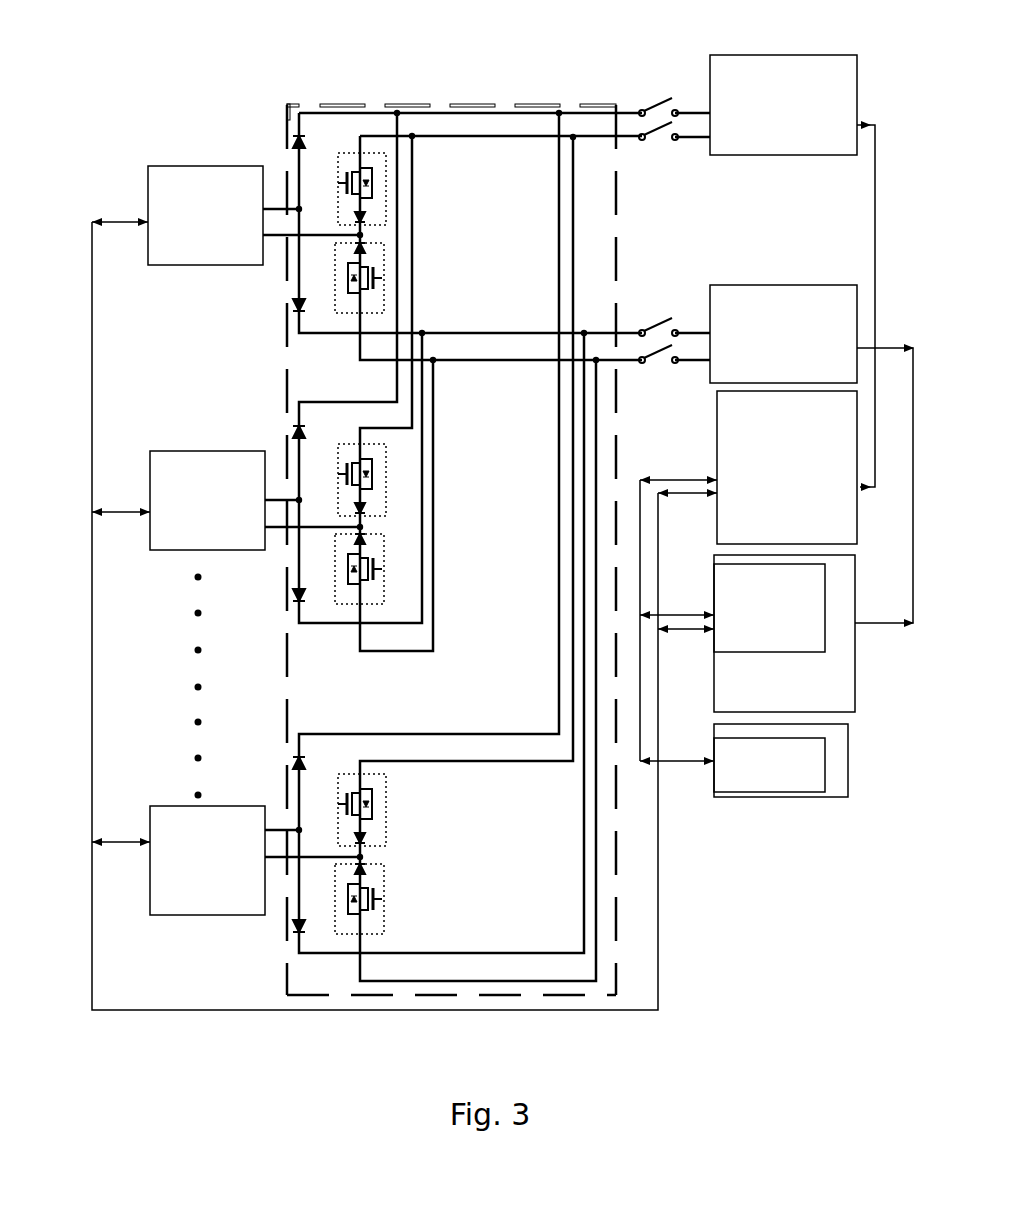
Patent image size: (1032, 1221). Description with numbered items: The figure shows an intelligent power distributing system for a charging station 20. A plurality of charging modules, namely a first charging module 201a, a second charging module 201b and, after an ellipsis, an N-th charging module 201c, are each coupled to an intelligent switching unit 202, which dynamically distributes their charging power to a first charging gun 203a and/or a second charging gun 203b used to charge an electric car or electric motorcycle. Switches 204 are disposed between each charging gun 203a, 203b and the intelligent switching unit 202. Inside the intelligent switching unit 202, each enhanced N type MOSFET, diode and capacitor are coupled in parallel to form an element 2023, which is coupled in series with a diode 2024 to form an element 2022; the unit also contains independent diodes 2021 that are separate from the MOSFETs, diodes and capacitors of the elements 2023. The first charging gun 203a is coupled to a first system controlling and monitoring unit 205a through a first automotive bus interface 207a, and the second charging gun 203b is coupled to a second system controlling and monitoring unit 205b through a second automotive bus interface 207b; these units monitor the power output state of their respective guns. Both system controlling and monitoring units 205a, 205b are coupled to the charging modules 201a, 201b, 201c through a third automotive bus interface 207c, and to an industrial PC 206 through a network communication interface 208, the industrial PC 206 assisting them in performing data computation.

The charging station 20 is at (245, 29).
The first charging module 201a is at (180, 165).
The second charging module 201b is at (175, 451).
The N-th charging module 201c is at (175, 806).
The intelligent switching unit 202 is at (486, 514).
The diode 2021 is at (297, 528).
The element 2022 is at (359, 530).
The element 2023 is at (414, 530).
The diode 2024 is at (423, 530).
The first charging gun 203a is at (778, 55).
The second charging gun 203b is at (756, 285).
The switch 204 is at (638, 106).
The first system controlling and monitoring unit 205a is at (716, 445).
The second system controlling and monitoring unit 205b is at (713, 587).
The industrial PC 206 is at (803, 798).
The first automotive bus interface 207a is at (875, 212).
The second automotive bus interface 207b is at (890, 626).
The third automotive bus interface 207c is at (90, 381).
The network communication interface 208 is at (680, 762).